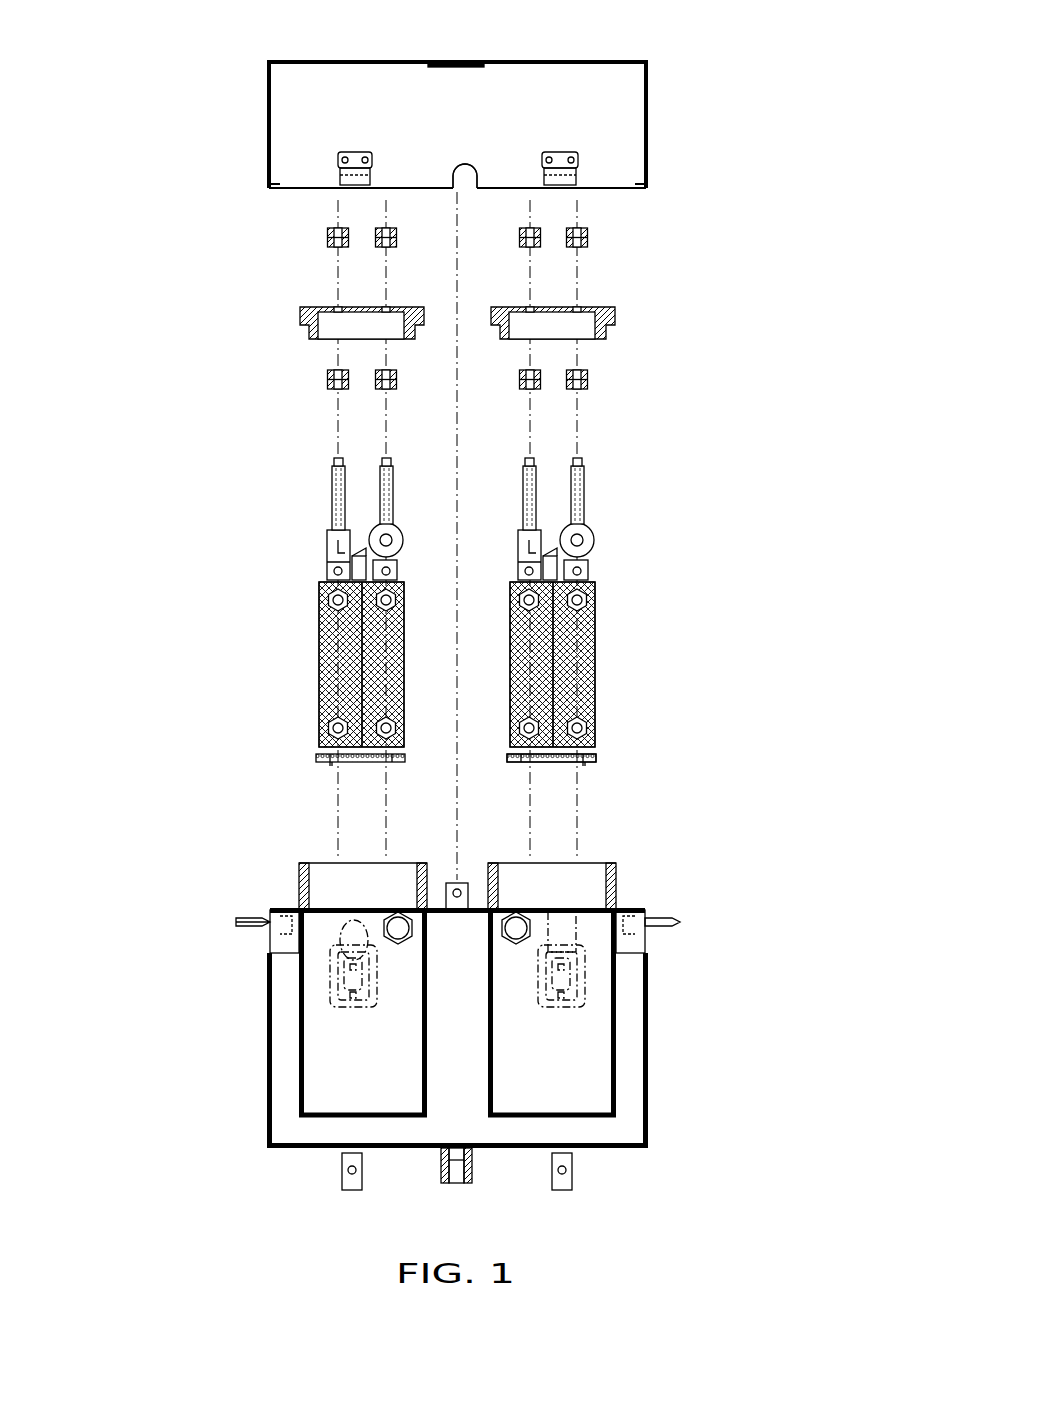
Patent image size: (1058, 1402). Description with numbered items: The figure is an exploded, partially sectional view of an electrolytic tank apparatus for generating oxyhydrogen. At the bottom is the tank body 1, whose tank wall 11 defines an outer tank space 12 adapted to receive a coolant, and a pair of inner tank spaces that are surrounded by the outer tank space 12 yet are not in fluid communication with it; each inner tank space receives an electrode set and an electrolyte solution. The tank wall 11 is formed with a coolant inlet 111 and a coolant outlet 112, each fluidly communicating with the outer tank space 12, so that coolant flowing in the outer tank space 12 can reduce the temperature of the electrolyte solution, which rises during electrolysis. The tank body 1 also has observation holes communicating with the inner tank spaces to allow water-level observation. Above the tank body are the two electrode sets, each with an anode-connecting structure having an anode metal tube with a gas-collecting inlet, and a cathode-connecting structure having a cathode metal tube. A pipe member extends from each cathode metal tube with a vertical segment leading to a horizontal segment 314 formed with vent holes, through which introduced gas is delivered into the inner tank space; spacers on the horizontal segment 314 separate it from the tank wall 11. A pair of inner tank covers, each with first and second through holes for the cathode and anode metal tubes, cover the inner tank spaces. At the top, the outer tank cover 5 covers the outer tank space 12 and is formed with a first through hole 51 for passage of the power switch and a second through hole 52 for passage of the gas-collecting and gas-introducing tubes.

The tank body 1 is at (475, 1023).
The tank wall 11 is at (451, 1013).
The coolant inlet 111 is at (350, 905).
The coolant outlet 112 is at (460, 1186).
The outer tank space 12 is at (628, 1060).
The horizontal segment 314 is at (596, 758).
The outer tank cover 5 is at (492, 128).
The first through hole 51 is at (455, 61).
The second through hole 52 is at (462, 182).